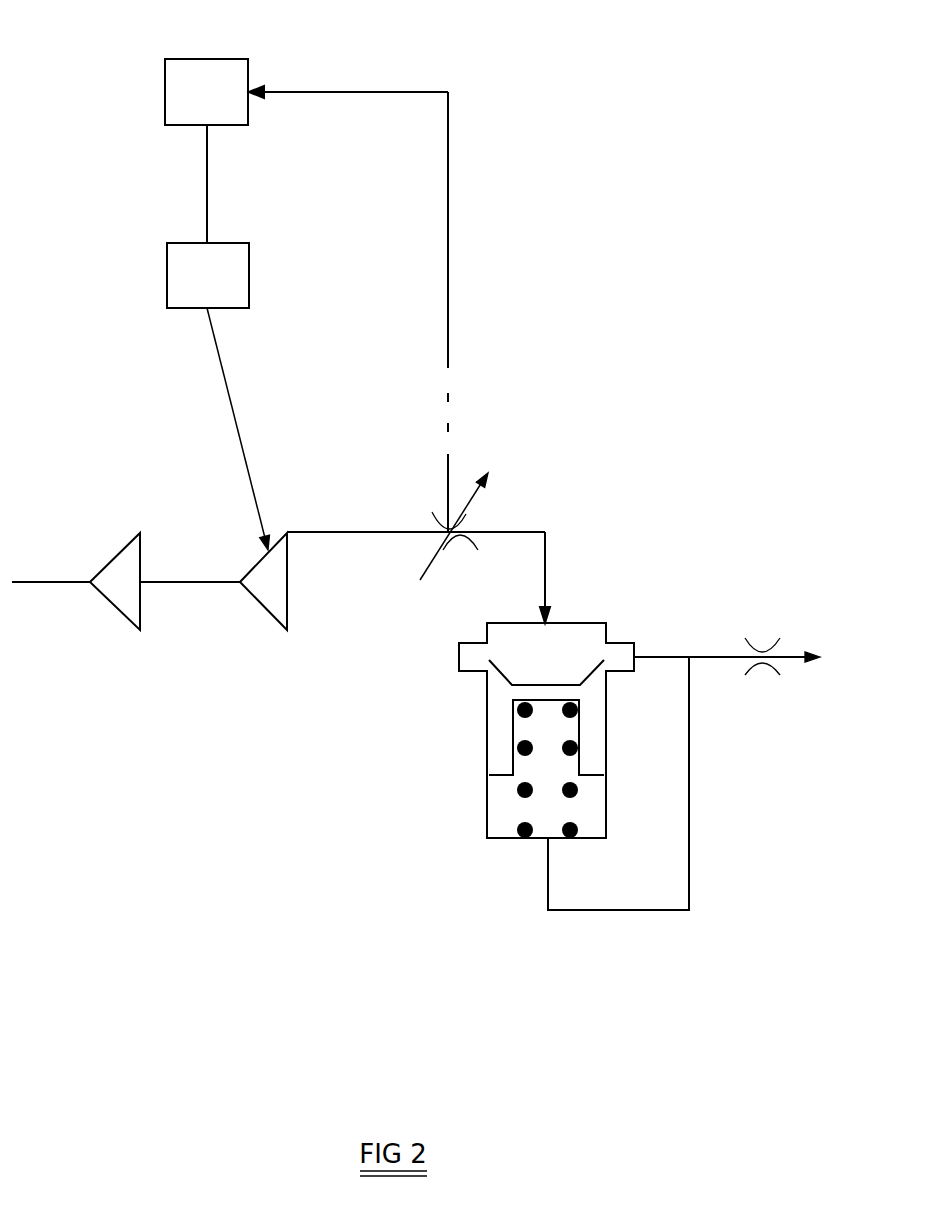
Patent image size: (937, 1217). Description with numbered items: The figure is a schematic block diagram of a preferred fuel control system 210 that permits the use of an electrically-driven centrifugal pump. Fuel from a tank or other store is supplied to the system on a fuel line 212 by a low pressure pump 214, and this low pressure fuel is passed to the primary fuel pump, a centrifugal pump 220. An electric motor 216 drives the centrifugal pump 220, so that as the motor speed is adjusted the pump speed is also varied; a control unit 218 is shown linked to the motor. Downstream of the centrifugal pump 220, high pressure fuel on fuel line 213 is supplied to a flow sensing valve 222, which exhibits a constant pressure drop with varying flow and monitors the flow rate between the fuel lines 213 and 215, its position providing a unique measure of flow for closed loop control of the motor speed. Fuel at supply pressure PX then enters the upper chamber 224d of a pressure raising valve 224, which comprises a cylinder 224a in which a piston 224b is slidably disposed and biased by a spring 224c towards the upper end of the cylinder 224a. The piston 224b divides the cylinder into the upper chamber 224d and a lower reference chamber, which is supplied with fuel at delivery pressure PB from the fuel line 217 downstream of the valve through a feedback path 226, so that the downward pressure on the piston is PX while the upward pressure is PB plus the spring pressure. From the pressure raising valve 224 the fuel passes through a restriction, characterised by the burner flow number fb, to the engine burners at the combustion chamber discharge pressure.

The fuel control system 210 is at (497, 262).
The fuel line 212 is at (50, 583).
The fuel line 213 is at (347, 533).
The low pressure pump 214 is at (115, 553).
The fuel line 215 is at (487, 528).
The electric motor 216 is at (167, 277).
The fuel line 217 is at (718, 656).
The controller 218 is at (165, 93).
The centrifugal pump 220 is at (262, 605).
The flow sensing valve 222 is at (415, 545).
The pressure raising valve 224 is at (553, 744).
The cylinder 224a is at (610, 806).
The piston 224b is at (498, 742).
The spring 224c is at (655, 1007).
The upper chamber 224d is at (525, 653).
The feedback path 226 is at (690, 743).